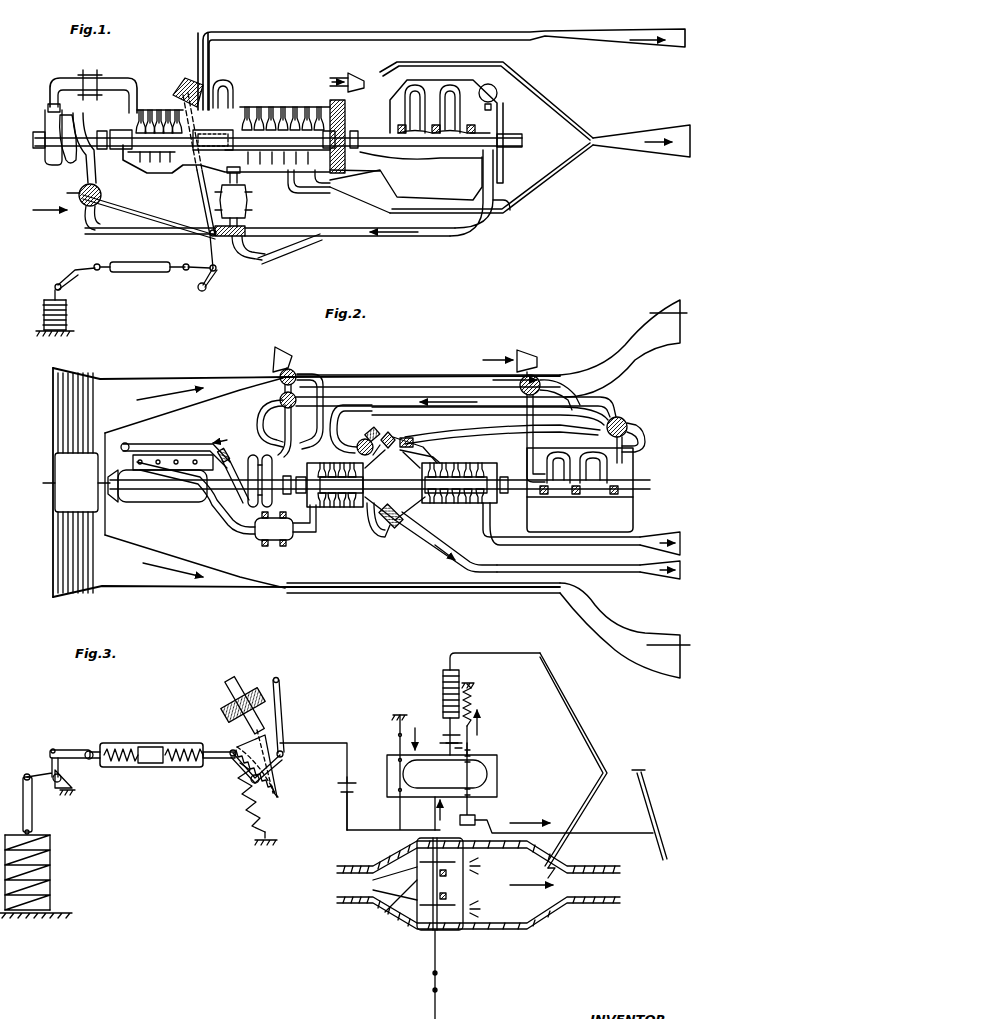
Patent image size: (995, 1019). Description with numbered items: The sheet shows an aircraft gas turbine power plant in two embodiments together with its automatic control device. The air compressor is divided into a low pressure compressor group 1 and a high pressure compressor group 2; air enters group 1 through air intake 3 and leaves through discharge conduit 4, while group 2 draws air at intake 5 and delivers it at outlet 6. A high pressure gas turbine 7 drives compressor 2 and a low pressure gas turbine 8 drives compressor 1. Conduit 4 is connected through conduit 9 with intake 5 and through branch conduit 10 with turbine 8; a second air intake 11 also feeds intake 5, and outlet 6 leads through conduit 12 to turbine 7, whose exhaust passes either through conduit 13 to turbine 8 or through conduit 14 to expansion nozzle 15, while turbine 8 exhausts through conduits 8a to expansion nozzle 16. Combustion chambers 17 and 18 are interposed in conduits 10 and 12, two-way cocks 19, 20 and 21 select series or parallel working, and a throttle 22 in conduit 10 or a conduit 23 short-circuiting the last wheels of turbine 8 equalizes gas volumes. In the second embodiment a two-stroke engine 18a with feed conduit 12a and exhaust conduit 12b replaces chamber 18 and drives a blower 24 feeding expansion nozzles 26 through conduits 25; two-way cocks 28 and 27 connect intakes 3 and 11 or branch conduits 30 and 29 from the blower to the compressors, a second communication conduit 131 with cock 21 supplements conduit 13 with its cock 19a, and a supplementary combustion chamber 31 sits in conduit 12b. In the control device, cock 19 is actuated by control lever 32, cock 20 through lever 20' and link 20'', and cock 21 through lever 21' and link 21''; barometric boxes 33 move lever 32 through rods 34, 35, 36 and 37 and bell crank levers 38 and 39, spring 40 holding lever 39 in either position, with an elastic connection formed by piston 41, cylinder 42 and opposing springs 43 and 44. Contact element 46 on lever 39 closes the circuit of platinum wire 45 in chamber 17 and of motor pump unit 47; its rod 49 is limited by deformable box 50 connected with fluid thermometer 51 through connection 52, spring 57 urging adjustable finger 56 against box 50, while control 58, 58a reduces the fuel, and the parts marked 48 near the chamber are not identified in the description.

In FIG. 1, the low pressure compressor group 1 is at (500, 118).
In FIG. 2, the low pressure compressor group 1 is at (576, 452).
In FIG. 1, the high pressure compressor group 2 is at (62, 155).
In FIG. 2, the high pressure compressor group 2 is at (252, 455).
In FIG. 1, the air intake 3 is at (353, 84).
In FIG. 2, the air intake 3 is at (529, 358).
In FIG. 1, the discharge conduit 4 is at (493, 206).
In FIG. 2, the discharge conduit 4 is at (628, 450).
In FIG. 1, the air intake 5 is at (80, 170).
In FIG. 2, the air intake 5 is at (300, 445).
In FIG. 1, the outlet 6 is at (50, 106).
In FIG. 2, the outlet 6 is at (232, 453).
In FIG. 1, the high pressure gas turbine 7 is at (157, 97).
In FIG. 2, the high pressure gas turbine 7 is at (338, 505).
In FIG. 1, the low pressure gas turbine 8 is at (272, 105).
In FIG. 2, the low pressure gas turbine 8 is at (477, 462).
In FIG. 1, the exhaust conduits 8a is at (522, 72).
In FIG. 2, the exhaust conduits 8a is at (548, 542).
In FIG. 1, the conduit 9 is at (142, 240).
In FIG. 2, the conduit 9 is at (424, 414).
In FIG. 1, the branch conduit 10 is at (330, 253).
In FIG. 2, the branch conduit 10 is at (440, 440).
In FIG. 1, the second air intake 11 is at (50, 198).
In FIG. 2, the second air intake 11 is at (293, 351).
In FIG. 1, the conduit 12 is at (63, 82).
In FIG. 2, the feed conduit 12a is at (187, 447).
In FIG. 2, the exhaust conduit 12b is at (232, 526).
In FIG. 1, the conduit 13 is at (226, 82).
In FIG. 2, the conduit 13 is at (389, 432).
In FIG. 2, the communication conduit 131 is at (370, 538).
In FIG. 1, the conduit 14 is at (362, 38).
In FIG. 2, the conduit 14 is at (585, 570).
In FIG. 1, the expansion nozzle 15 is at (647, 45).
In FIG. 2, the expansion nozzle 15 is at (657, 581).
In FIG. 1, the expansion nozzle 16 is at (643, 135).
In FIG. 2, the expansion nozzle 16 is at (658, 535).
In FIG. 1, the combustion chamber 17 is at (248, 200).
In FIG. 2, the combustion chamber 17 is at (408, 437).
In FIG. 3, the combustion chamber 17 is at (537, 908).
In FIG. 1, the combustion chamber 18 is at (90, 76).
In FIG. 2, the two-stroke engine 18a is at (158, 490).
In FIG. 1, the two-way cock 19 is at (244, 227).
In FIG. 2, the two-way cock 19 is at (622, 417).
In FIG. 3, the two-way cock 19 is at (232, 700).
In FIG. 2, the two-way cock 19a is at (366, 438).
In FIG. 1, the two-way cock 20 is at (90, 220).
In FIG. 2, the two-way cock 20 is at (422, 401).
In FIG. 1, the lever 20' is at (56, 196).
In FIG. 1, the link 20'' is at (149, 211).
In FIG. 1, the two-way cock 21 is at (185, 80).
In FIG. 2, the two-way cock 21 is at (438, 538).
In FIG. 1, the lever 21' is at (167, 98).
In FIG. 1, the link 21'' is at (192, 180).
In FIG. 1, the throttle 22 is at (280, 259).
In FIG. 1, the conduit 23 is at (320, 197).
In FIG. 2, the blower 24 is at (108, 392).
In FIG. 2, the conduits 25 is at (438, 375).
In FIG. 2, the expansion nozzles 26 is at (655, 330).
In FIG. 2, the two-way cock 27 is at (279, 373).
In FIG. 2, the two-way cock 28 is at (538, 379).
In FIG. 2, the branch conduit 29 is at (320, 385).
In FIG. 2, the branch conduit 30 is at (603, 386).
In FIG. 2, the supplementary combustion chamber 31 is at (275, 542).
In FIG. 1, the control lever 32 is at (215, 265).
In FIG. 3, the control lever 32 is at (276, 678).
In FIG. 1, the barometric boxes 33 is at (68, 317).
In FIG. 3, the barometric boxes 33 is at (55, 856).
In FIG. 3, the rod 34 is at (33, 812).
In FIG. 3, the rod 35 is at (67, 750).
In FIG. 3, the rod 36 is at (216, 759).
In FIG. 1, the rod 37 is at (210, 249).
In FIG. 3, the rod 37 is at (282, 708).
In FIG. 1, the bell crank lever 38 is at (82, 283).
In FIG. 3, the bell crank lever 38 is at (72, 773).
In FIG. 1, the bell crank lever 39 is at (208, 288).
In FIG. 3, the bell crank lever 39 is at (276, 766).
In FIG. 3, the spring 40 is at (252, 807).
In FIG. 3, the piston 41 is at (152, 747).
In FIG. 1, the cylinder 42 is at (150, 273).
In FIG. 3, the cylinder 42 is at (110, 744).
In FIG. 3, the spring 43 is at (120, 748).
In FIG. 3, the spring 44 is at (188, 745).
In FIG. 3, the platinum wire 45 is at (445, 930).
In FIG. 3, the contact element 46 is at (284, 748).
In FIG. 3, the motor pump unit 47 is at (488, 773).
In FIG. 3, the injector 48 is at (467, 868).
In FIG. 3, the rod 49 is at (473, 755).
In FIG. 3, the deformable box 50 is at (443, 681).
In FIG. 3, the fluid thermometer 51 is at (600, 760).
In FIG. 3, the connection 52 is at (563, 850).
In FIG. 3, the adjustable finger 56 is at (445, 723).
In FIG. 3, the spring 57 is at (473, 700).
In FIG. 3, the control 58 is at (527, 826).
In FIG. 3, the control 58a is at (647, 815).